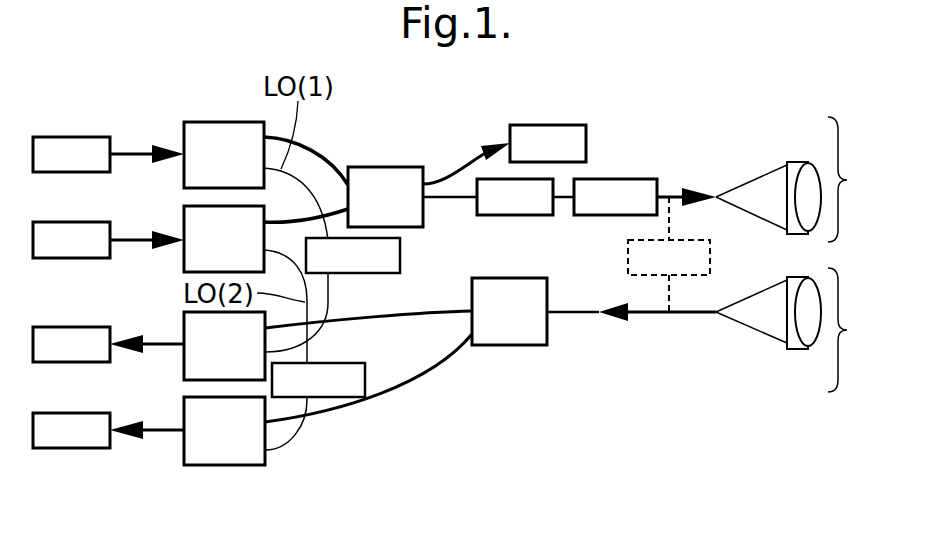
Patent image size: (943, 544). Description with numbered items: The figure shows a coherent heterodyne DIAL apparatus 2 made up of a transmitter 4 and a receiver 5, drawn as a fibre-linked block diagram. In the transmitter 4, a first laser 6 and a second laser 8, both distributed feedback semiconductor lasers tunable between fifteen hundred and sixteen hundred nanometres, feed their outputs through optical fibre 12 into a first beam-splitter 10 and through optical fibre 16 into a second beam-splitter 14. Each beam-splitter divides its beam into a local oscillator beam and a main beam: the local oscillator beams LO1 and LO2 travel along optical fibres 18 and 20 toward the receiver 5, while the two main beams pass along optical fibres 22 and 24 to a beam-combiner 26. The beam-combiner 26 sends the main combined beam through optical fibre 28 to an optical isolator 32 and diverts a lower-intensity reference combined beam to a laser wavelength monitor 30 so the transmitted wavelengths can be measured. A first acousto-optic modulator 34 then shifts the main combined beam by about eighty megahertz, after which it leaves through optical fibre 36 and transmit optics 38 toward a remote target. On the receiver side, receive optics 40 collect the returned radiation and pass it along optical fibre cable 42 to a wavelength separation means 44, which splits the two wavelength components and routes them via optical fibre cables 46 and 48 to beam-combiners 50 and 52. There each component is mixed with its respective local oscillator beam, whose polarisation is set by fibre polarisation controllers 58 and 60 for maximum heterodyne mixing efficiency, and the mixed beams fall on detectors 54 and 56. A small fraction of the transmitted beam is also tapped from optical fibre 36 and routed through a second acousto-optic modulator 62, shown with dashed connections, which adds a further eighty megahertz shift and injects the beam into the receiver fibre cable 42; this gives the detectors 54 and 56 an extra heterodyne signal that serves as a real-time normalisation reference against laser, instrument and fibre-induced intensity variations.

The coherent DIAL apparatus 2 is at (100, 88).
The transmitter 4 is at (848, 179).
The receiver 5 is at (848, 330).
The first laser 6 is at (62, 142).
The second laser 8 is at (42, 235).
The first beam-splitter 10 is at (205, 130).
The optical fibre 12 is at (133, 150).
The second beam-splitter 14 is at (204, 258).
The optical fibre 16 is at (130, 238).
The optical fibre 18 is at (327, 307).
The optical fibre 20 is at (302, 176).
The optical fibre 22 is at (278, 136).
The optical fibre 24 is at (341, 198).
The beam-combiner 26 is at (412, 212).
The optical fibre 28 is at (457, 194).
The laser wavelength monitor 30 is at (570, 132).
The optical isolator 32 is at (535, 205).
The first acousto-optic modulator 34 is at (630, 180).
The optical fibre 36 is at (674, 193).
The transmit optics 38 is at (786, 158).
The receive optics 40 is at (800, 356).
The optical fibre cable 42 is at (687, 314).
The wavelength separation means 44 is at (535, 327).
The optical fibre cable 46 is at (433, 321).
The optical fibre cable 48 is at (430, 373).
The beam-combiner 50 is at (197, 362).
The beam-combiner 52 is at (220, 452).
The detector 54 is at (96, 331).
The detector 56 is at (62, 440).
The fibre polarisation controller 58 is at (400, 266).
The fibre polarisation controller 60 is at (327, 394).
The second acousto-optic modulator 62 is at (628, 253).